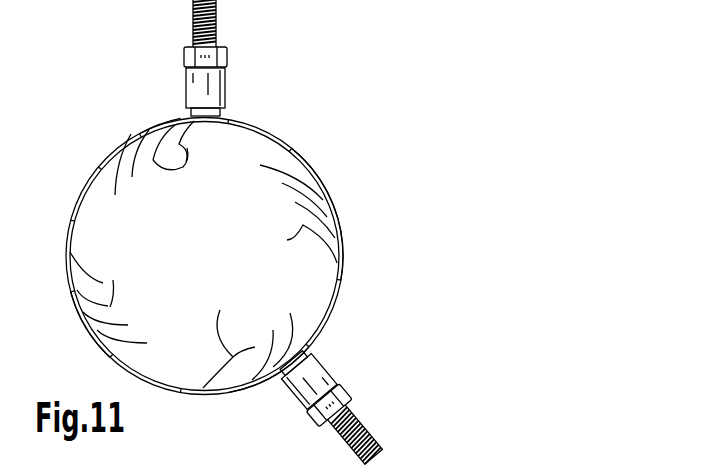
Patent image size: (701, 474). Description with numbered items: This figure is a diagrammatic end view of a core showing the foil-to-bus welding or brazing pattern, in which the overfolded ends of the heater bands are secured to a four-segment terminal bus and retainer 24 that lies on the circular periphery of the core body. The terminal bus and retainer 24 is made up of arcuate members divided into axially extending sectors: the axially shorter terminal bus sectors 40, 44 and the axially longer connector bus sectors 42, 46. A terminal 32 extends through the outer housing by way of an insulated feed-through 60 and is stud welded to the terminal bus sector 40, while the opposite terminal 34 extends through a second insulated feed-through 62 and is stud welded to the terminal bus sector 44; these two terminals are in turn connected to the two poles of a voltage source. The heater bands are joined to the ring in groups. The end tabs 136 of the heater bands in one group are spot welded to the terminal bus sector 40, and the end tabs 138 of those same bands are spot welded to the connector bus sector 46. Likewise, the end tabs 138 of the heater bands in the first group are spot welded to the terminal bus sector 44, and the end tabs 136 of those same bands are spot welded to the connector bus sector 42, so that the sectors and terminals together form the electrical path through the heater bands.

The terminal bus and retainer 24 is at (355, 174).
The terminal 32 is at (215, 25).
The terminal 34 is at (350, 410).
The terminal bus sector 40 is at (138, 130).
The connector bus sector 42 is at (72, 290).
The terminal bus sector 44 is at (248, 392).
The connector bus sector 46 is at (338, 233).
The insulated feed-through 60 is at (245, 61).
The insulated feed-through 62 is at (345, 343).
The end tabs 136 is at (95, 277).
The end tabs 138 is at (269, 276).